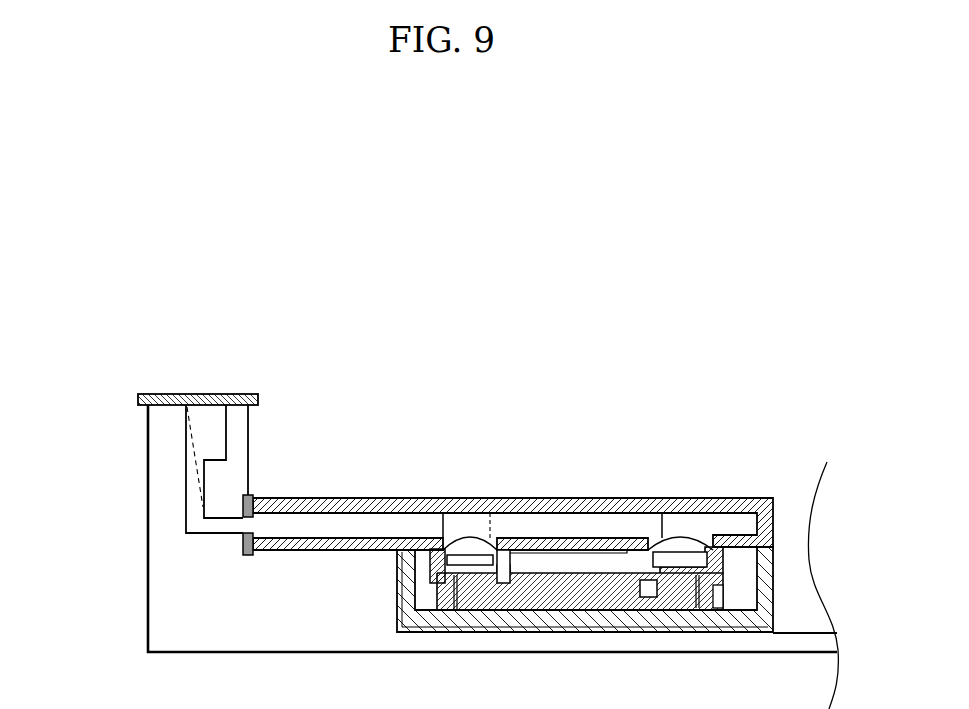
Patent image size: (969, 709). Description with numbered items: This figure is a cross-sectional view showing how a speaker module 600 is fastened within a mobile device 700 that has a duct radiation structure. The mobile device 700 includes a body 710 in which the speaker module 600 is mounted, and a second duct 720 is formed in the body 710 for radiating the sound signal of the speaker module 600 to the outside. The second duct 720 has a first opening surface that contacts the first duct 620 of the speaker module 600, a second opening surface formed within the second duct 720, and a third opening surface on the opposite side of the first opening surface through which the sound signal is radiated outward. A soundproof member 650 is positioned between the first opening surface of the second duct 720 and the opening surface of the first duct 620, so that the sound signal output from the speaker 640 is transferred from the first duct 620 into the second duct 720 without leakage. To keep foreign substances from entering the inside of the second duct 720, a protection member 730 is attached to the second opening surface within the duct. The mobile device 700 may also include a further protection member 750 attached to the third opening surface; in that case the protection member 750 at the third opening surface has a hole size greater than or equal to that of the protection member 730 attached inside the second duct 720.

The speaker module 600 is at (578, 445).
The first duct 620 is at (394, 499).
The speaker 640 is at (573, 567).
The soundproof member 650 is at (255, 540).
The mobile device 700 is at (82, 362).
The body 710 is at (187, 587).
The second duct 720 is at (185, 485).
The protection member 730 is at (186, 437).
The protection member 750 is at (143, 388).